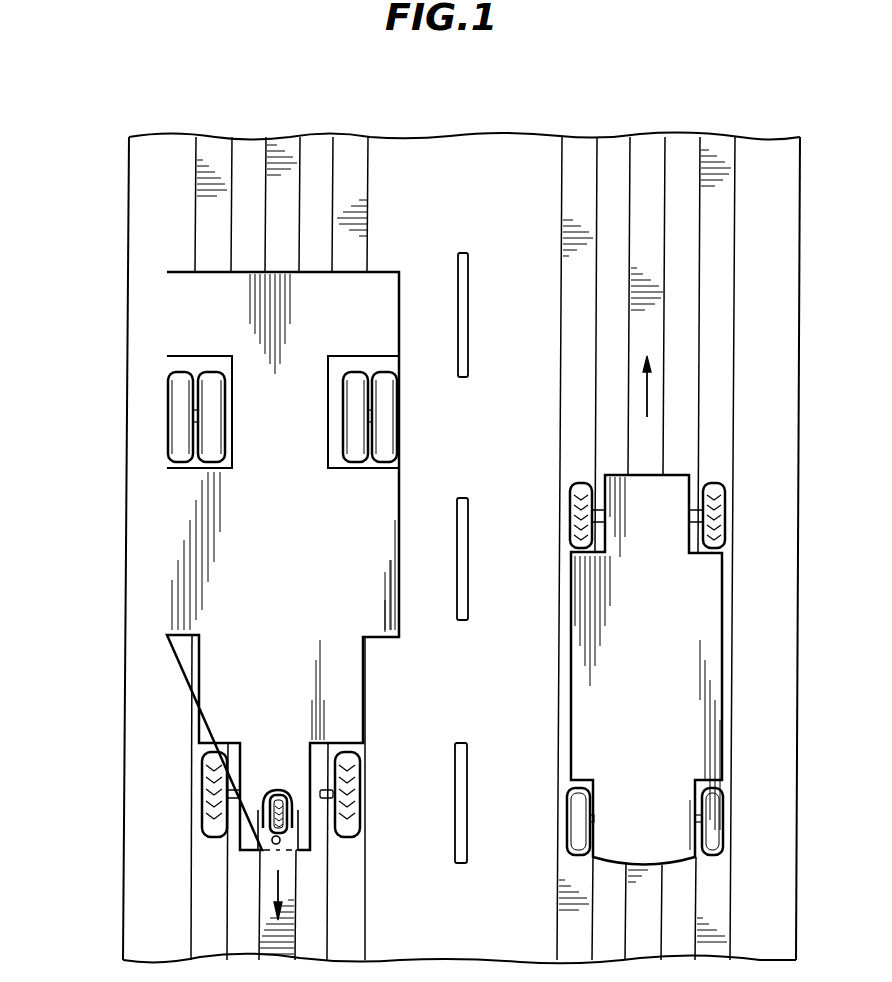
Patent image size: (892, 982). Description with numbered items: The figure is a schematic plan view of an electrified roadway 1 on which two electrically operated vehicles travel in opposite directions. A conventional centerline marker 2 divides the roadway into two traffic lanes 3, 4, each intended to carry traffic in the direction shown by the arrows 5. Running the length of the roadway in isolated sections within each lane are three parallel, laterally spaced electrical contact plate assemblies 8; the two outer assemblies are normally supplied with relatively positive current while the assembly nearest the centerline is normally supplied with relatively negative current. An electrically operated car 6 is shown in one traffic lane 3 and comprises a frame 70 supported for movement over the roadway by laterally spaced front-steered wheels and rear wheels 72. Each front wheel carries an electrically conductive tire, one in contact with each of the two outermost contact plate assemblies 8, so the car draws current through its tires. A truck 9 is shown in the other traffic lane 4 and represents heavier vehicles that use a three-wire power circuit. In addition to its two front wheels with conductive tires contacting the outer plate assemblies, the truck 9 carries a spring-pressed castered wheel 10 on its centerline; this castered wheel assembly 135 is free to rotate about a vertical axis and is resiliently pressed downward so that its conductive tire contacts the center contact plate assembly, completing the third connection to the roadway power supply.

The electrified roadway 1 is at (104, 706).
The centerline marker 2 is at (468, 368).
The traffic lane 3 is at (652, 205).
The traffic lane 4 is at (292, 233).
The arrows 5 is at (645, 396).
The electrically operated car 6 is at (723, 630).
The electrical contact plate assemblies 8 is at (220, 135).
The truck 9 is at (165, 588).
The spring-pressed castered wheel 10 is at (291, 793).
The frame 70 is at (724, 700).
The rear wheels 72 is at (567, 815).
The castered wheel assembly 135 is at (266, 778).